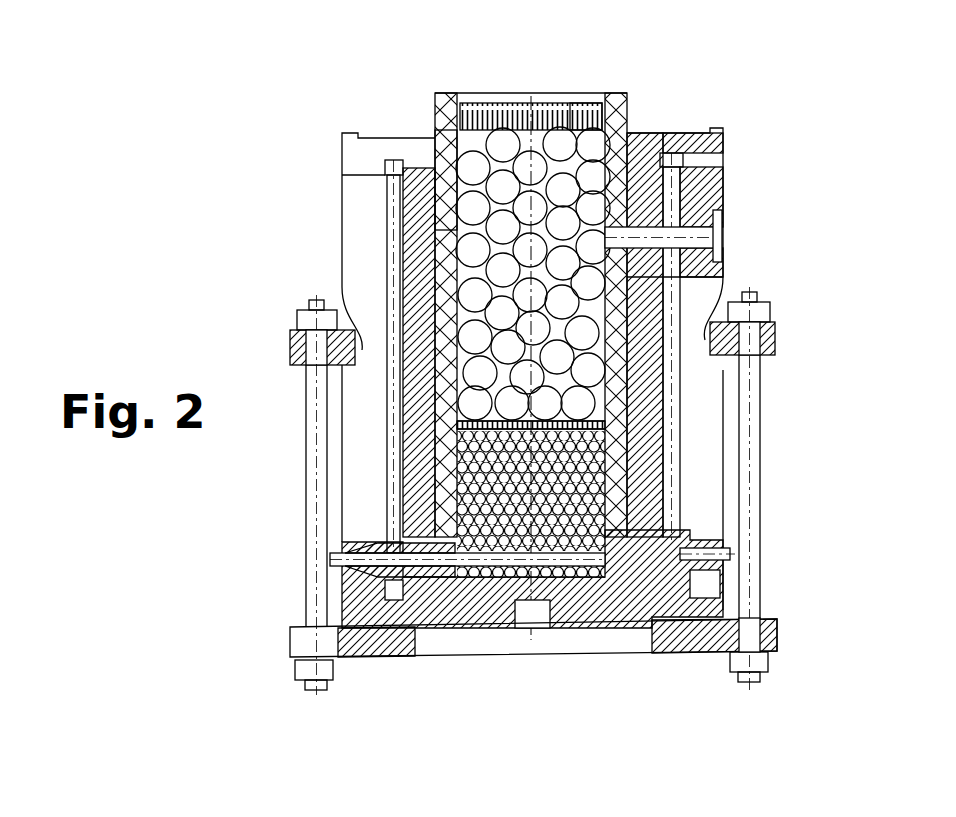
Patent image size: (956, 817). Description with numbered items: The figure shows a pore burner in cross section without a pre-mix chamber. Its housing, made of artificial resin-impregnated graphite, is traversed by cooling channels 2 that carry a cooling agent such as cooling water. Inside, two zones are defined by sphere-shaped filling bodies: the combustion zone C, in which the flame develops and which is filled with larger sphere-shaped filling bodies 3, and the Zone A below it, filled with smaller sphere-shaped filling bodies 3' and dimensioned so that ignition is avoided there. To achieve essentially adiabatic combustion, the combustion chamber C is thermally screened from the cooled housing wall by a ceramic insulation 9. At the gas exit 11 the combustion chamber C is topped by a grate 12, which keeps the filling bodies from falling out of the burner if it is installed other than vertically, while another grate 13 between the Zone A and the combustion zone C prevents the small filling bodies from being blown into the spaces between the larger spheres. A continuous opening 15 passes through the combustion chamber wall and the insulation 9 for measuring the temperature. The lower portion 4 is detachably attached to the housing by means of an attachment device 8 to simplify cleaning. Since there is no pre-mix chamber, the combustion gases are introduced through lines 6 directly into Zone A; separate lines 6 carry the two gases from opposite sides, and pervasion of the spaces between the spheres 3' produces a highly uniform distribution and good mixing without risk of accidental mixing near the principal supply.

The cooling channels 2 is at (392, 215).
The larger sphere-shaped filling bodies 3 is at (573, 249).
The smaller sphere-shaped filling bodies 3' is at (661, 510).
The lower portion 4 is at (615, 610).
The lines 6 is at (350, 560).
The attachment device 8 is at (753, 410).
The ceramic insulation 9 is at (448, 97).
The gas exit 11 is at (553, 93).
The grate 12 is at (583, 122).
The grate 13 is at (460, 426).
The continuous opening 15 is at (723, 250).
The Zone A is at (590, 463).
The combustion zone C is at (453, 183).